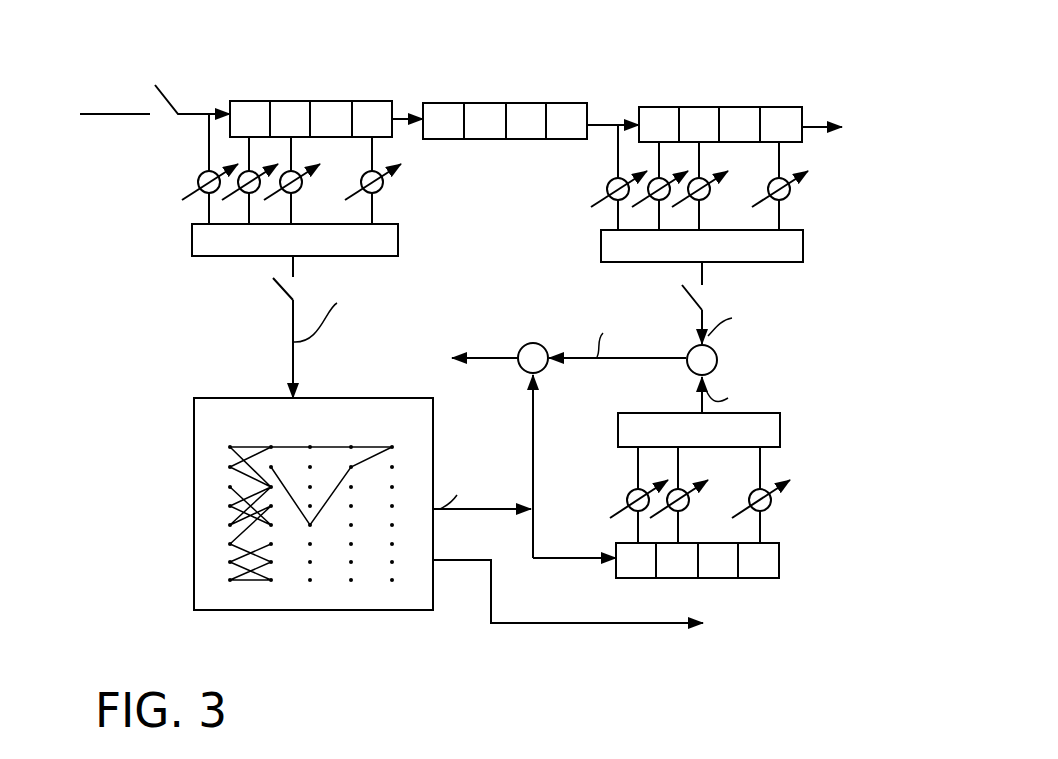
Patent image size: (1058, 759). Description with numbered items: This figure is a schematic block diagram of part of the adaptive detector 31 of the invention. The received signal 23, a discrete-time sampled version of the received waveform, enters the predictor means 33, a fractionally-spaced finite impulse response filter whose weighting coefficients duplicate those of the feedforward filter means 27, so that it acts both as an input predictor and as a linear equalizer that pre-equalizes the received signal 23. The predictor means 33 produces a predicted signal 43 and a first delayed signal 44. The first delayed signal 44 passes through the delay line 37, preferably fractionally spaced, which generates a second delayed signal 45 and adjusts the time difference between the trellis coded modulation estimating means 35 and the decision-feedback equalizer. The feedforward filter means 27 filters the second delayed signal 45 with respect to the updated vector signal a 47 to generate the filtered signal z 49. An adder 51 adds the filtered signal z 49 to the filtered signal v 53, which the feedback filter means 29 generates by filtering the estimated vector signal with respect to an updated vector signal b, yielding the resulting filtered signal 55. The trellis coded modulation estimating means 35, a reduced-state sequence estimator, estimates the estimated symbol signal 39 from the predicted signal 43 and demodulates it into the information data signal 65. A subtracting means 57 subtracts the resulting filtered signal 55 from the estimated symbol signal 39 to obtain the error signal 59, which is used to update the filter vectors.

The received signal 23 is at (110, 113).
The predictor means 33 is at (268, 97).
The first delayed signal 44 is at (410, 113).
The delay line 37 is at (507, 103).
The second delayed signal 45 is at (592, 122).
The feedforward filter means 27 is at (720, 104).
The detector 31 is at (833, 93).
The updated vector signal a 47 is at (797, 200).
The predicted signal 43 is at (293, 318).
The trellis coded modulation estimating means 35 is at (298, 610).
The estimated symbol signal 39 is at (502, 508).
The subtracting means 57 is at (532, 342).
The error signal 59 is at (453, 348).
The resulting filtered signal 55 is at (642, 358).
The filtered signal z 49 is at (708, 325).
The adder 51 is at (717, 354).
The filtered signal v 53 is at (712, 393).
The feedback filter means 29 is at (770, 583).
The information data signal 65 is at (548, 623).